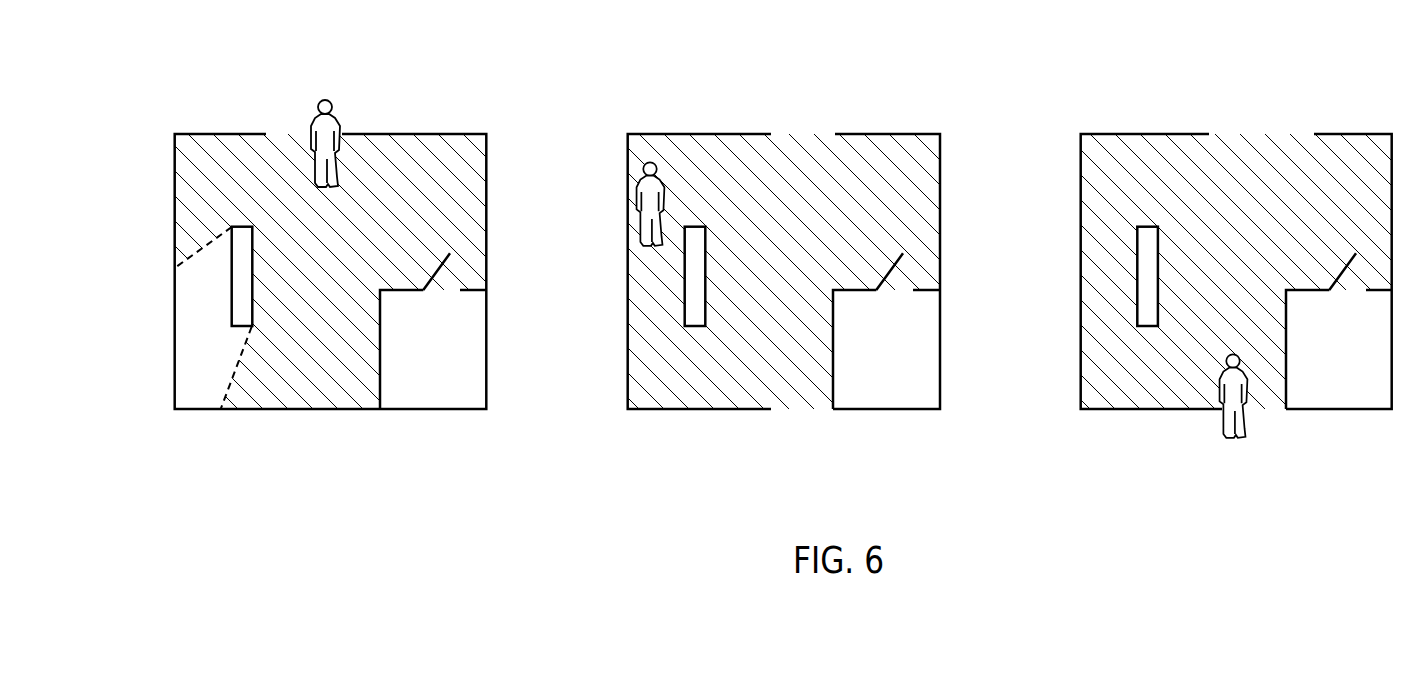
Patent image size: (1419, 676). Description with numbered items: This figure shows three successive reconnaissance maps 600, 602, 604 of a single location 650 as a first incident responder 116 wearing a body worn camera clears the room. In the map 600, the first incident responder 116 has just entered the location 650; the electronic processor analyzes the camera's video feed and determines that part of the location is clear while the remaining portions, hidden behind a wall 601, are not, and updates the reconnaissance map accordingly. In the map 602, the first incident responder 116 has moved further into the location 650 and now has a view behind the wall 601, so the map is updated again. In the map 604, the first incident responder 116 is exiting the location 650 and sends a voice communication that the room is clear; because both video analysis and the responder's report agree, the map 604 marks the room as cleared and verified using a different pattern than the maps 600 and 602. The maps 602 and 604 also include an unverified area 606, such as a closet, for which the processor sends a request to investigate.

The map 600 is at (224, 107).
The map 602 is at (721, 92).
The map 604 is at (1126, 107).
The wall 601 is at (232, 226).
The location 650 is at (352, 285).
The unverified area 606 is at (871, 425).
The first incident responder 116 is at (338, 117).